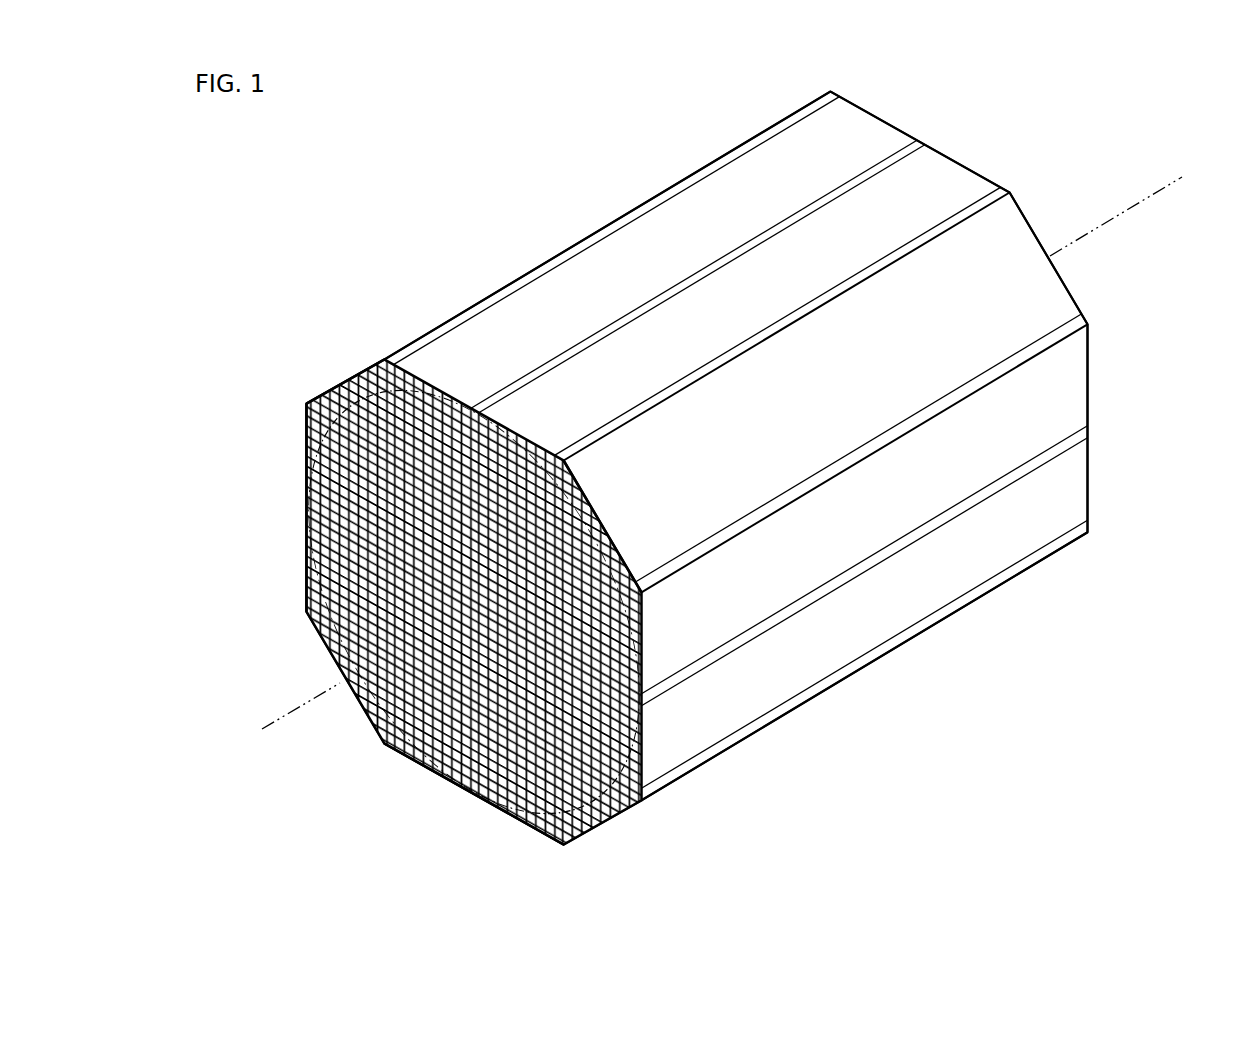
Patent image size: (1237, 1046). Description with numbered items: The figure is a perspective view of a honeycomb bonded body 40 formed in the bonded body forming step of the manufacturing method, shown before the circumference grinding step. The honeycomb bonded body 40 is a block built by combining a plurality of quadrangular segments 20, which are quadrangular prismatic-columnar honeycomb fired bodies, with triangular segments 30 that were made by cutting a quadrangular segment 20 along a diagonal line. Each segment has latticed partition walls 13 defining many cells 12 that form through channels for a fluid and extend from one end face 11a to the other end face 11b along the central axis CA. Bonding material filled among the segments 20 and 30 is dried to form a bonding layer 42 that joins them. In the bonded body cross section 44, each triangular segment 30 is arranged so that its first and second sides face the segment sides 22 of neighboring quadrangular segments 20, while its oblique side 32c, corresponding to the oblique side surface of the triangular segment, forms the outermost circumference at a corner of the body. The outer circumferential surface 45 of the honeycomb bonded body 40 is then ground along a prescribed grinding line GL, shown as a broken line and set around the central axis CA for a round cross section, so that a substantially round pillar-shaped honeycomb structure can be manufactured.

The honeycomb bonded body 40 is at (437, 238).
The one end face 11a is at (523, 822).
The other end face 11b is at (1043, 247).
The cells 12 is at (304, 566).
The partition walls 13 is at (304, 531).
The quadrangular segment 20 is at (868, 122).
The segment side 22 is at (407, 355).
The triangular segment 30 is at (832, 343).
The oblique side 32c is at (1058, 268).
The bonding layer 42 is at (801, 96).
The bonded body cross section 44 is at (583, 490).
The circumferential surface 45 is at (493, 331).
The grinding line GL is at (520, 428).
The central axis CA is at (720, 453).